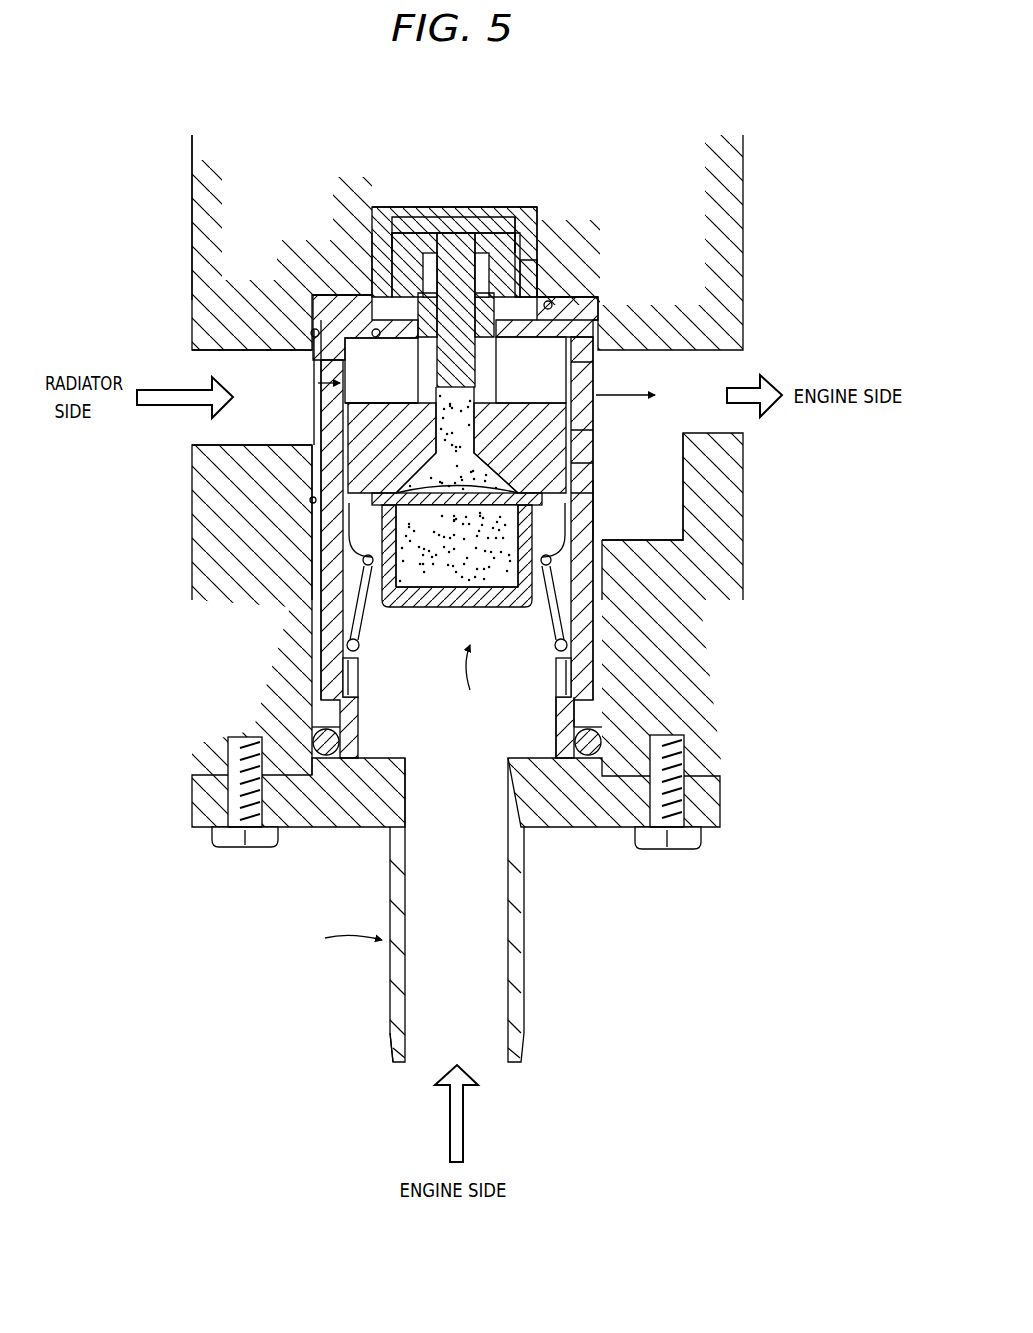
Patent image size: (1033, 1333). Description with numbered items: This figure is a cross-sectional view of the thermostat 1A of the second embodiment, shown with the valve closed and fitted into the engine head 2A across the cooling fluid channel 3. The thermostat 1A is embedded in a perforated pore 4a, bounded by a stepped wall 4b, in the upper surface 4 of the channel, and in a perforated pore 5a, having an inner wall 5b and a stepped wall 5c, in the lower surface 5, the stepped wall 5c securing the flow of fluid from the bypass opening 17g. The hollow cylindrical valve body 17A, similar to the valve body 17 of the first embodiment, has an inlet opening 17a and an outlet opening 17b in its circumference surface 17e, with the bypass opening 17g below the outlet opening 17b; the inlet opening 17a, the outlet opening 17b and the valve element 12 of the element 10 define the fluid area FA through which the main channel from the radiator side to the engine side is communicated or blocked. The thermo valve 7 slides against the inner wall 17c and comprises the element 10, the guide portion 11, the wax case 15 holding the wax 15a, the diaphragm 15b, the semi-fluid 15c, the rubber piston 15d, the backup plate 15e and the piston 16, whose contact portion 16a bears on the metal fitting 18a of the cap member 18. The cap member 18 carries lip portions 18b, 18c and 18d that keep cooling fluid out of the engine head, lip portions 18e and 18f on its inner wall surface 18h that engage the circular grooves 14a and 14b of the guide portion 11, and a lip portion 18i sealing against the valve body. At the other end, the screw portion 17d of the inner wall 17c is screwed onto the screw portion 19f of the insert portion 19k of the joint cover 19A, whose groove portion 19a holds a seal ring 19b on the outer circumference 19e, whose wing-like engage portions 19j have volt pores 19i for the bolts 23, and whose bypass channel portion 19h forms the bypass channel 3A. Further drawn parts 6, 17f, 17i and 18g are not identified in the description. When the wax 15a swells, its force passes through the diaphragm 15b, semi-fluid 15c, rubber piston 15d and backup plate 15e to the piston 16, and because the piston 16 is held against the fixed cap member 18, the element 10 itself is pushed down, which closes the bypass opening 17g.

The engine head 2A is at (727, 200).
The upper surface 4 is at (215, 358).
The perforated pore 4a is at (318, 300).
The stepped wall 4b is at (310, 300).
The lower surface 5 is at (200, 446).
The perforated pore 5a is at (585, 695).
The inner wall 5b is at (310, 500).
The stepped wall 5c is at (640, 540).
The cooling fluid channel 3 is at (232, 428).
The cap member 18 is at (398, 207).
The metal fitting 18a is at (512, 210).
The lip portion 18b is at (535, 225).
The lip portion 18c is at (548, 293).
The lip portion 18d is at (560, 307).
The lip portion 18e is at (545, 240).
The lip portion 18f is at (573, 308).
The insert 18g is at (487, 250).
The inner wall surface 18h is at (425, 250).
The lip portion 18i is at (553, 300).
The piston 16 is at (465, 232).
The contact portion 16a is at (441, 232).
The circular groove 14a is at (418, 318).
The circular groove 14b is at (433, 388).
The guide portion 11 is at (413, 312).
The valve body 17 is at (585, 667).
The valve body 17A is at (330, 330).
The inlet opening 17a is at (315, 383).
The outlet opening 17b is at (594, 425).
The inner wall 17c is at (537, 600).
The screw portion 17d is at (350, 672).
The circumference surface 17e is at (321, 580).
The upper portion 17f is at (540, 270).
The bypass opening 17g is at (594, 495).
The flange top 17i is at (330, 318).
The fluid area FA is at (540, 360).
The element 10 is at (320, 418).
The valve element 12 is at (578, 462).
The wax case 15 is at (390, 608).
The wax 15a is at (470, 603).
The diaphragm 15b is at (465, 498).
The semi-fluid 15c is at (438, 500).
The rubber piston 15d is at (452, 466).
The backup plate 15e is at (433, 348).
The spring lever 6 is at (554, 637).
The thermo valve 7 is at (470, 682).
The groove portion 19a is at (342, 750).
The seal ring 19b is at (342, 732).
The outer circumference 19e is at (590, 724).
The screw portion 19f is at (572, 692).
The joint cover 19A is at (190, 828).
The bypass channel portion 19h is at (390, 990).
The volt pore 19i is at (225, 823).
The engage portion 19j is at (200, 787).
The insert portion 19k is at (562, 716).
The bolt 23 is at (245, 842).
The thermostat 1A is at (349, 910).
The bypass channel 3A is at (512, 935).